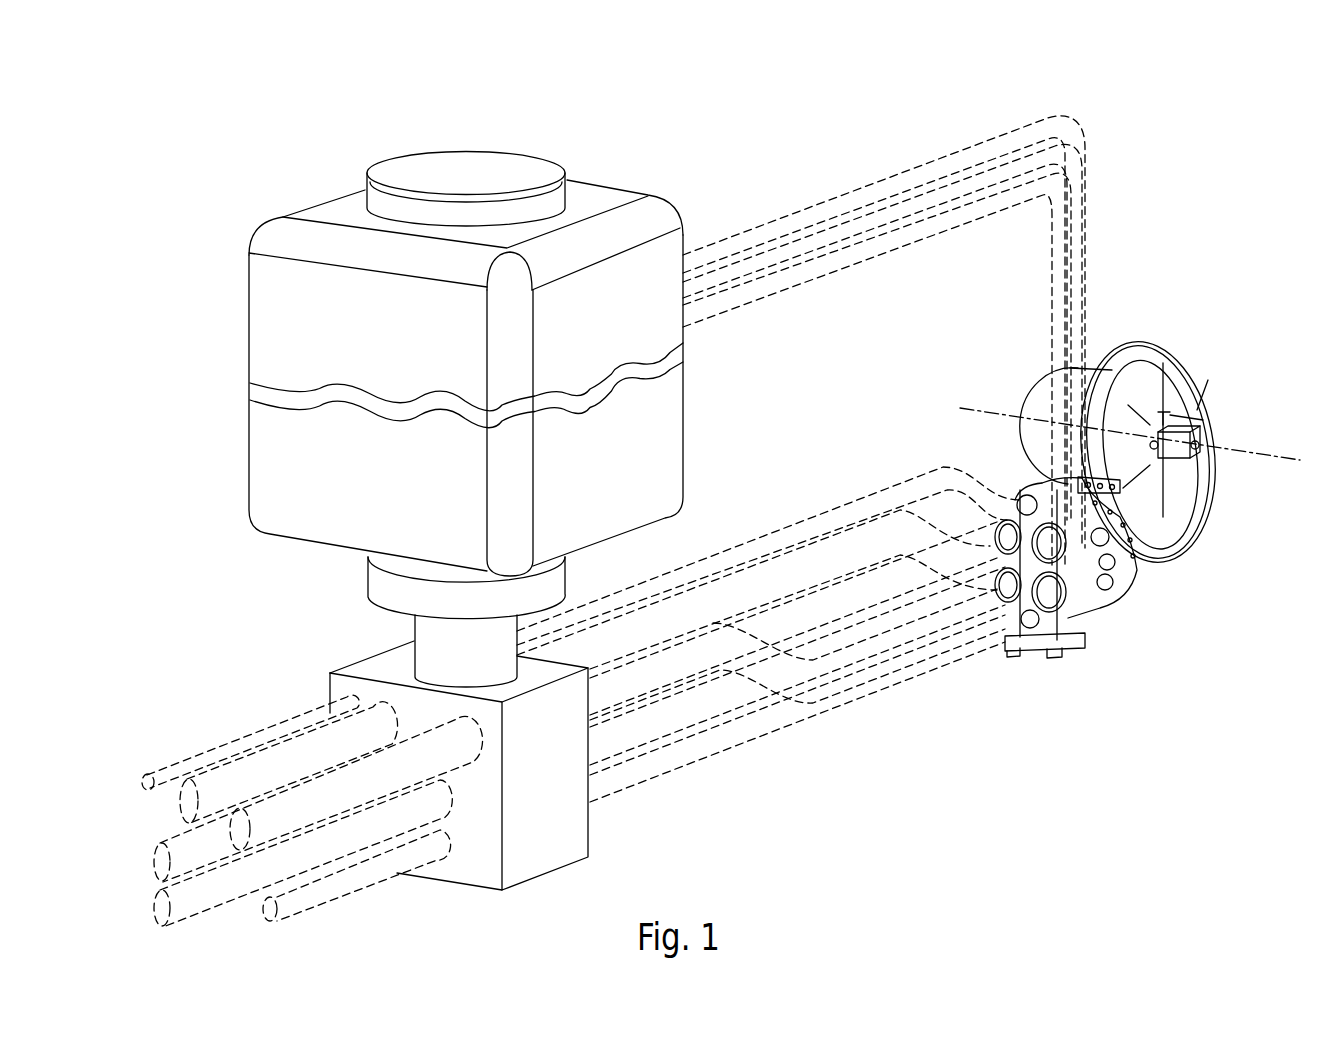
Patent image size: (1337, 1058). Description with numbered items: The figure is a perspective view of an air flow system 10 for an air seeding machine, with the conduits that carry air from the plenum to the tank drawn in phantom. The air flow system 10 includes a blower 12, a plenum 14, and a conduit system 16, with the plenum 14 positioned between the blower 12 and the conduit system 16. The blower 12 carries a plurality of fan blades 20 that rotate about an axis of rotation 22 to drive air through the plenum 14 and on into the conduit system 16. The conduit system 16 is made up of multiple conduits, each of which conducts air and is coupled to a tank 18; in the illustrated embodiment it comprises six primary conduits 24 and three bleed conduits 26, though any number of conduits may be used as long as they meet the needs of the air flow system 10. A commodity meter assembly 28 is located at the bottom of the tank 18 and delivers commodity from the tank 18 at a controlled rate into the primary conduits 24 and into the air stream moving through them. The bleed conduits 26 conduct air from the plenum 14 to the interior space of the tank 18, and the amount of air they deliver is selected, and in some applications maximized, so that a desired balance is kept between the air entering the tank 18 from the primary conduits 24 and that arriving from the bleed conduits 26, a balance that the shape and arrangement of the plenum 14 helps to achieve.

The air flow system 10 is at (1198, 132).
The blower 12 is at (1163, 338).
The plenum 14 is at (1136, 583).
The conduit system 16 is at (918, 795).
The tank 18 is at (332, 203).
The fan blades 20 is at (1167, 487).
The axis of rotation 22 is at (975, 405).
The primary conduits 24 is at (758, 772).
The bleed conduits 26 is at (847, 180).
The commodity meter assembly 28 is at (350, 632).